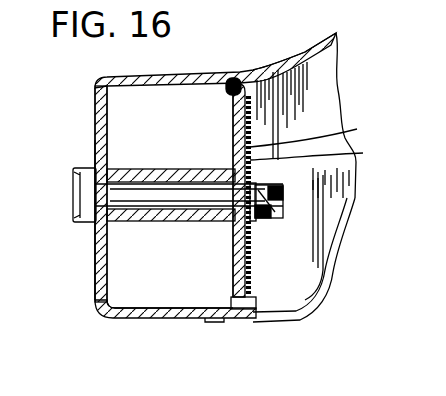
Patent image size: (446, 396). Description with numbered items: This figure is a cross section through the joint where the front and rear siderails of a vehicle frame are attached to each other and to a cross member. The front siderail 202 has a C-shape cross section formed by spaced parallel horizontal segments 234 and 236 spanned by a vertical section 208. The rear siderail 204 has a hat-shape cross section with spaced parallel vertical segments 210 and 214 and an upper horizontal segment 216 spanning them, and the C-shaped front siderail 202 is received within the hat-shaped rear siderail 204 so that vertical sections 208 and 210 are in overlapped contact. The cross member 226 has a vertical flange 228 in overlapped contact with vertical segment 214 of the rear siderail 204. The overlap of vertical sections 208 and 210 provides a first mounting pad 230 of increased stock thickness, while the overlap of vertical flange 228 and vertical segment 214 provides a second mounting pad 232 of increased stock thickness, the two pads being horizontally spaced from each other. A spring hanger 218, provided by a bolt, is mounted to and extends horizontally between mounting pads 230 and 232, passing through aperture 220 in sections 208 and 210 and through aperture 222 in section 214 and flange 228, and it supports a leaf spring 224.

The front siderail 202 is at (110, 88).
The rear siderail 204 is at (100, 78).
The vertical section 208 is at (109, 139).
The vertical section 210 is at (96, 110).
The vertical segment 214 is at (234, 153).
The upper horizontal segment 216 is at (181, 70).
The spring hanger 218 is at (283, 201).
The aperture 220 is at (93, 225).
The aperture 222 is at (283, 205).
The leaf spring 224 is at (158, 223).
The cross member 226 is at (323, 100).
The vertical flange 228 is at (324, 131).
The first mounting pad 230 is at (96, 160).
The second mounting pad 232 is at (326, 156).
The horizontal segment 234 is at (206, 92).
The horizontal segment 236 is at (192, 320).